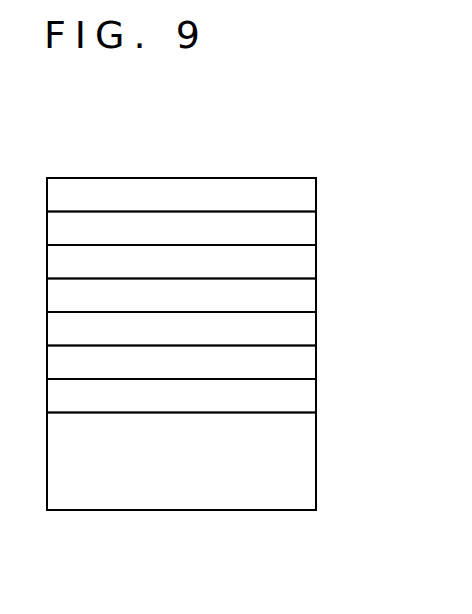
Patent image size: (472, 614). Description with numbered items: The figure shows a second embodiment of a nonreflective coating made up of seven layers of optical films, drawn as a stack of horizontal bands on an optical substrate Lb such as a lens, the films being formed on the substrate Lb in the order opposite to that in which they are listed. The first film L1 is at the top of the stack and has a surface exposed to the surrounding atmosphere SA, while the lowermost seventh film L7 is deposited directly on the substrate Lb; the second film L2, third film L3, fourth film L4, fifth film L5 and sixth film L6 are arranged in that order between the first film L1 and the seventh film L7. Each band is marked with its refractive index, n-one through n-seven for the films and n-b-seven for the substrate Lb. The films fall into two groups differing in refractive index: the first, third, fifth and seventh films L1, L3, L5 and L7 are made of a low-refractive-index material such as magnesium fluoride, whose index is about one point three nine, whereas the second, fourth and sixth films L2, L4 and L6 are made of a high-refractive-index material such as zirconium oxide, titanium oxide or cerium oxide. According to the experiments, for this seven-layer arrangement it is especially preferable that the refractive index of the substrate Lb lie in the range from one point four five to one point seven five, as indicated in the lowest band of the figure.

The surrounding atmosphere SA is at (181, 311).
The first film L1 is at (306, 196).
The second film L2 is at (306, 231).
The third film L3 is at (306, 266).
The fourth film L4 is at (306, 298).
The fifth film L5 is at (306, 328).
The sixth film L6 is at (306, 363).
The seventh film L7 is at (306, 396).
The optical substrate Lb is at (221, 498).